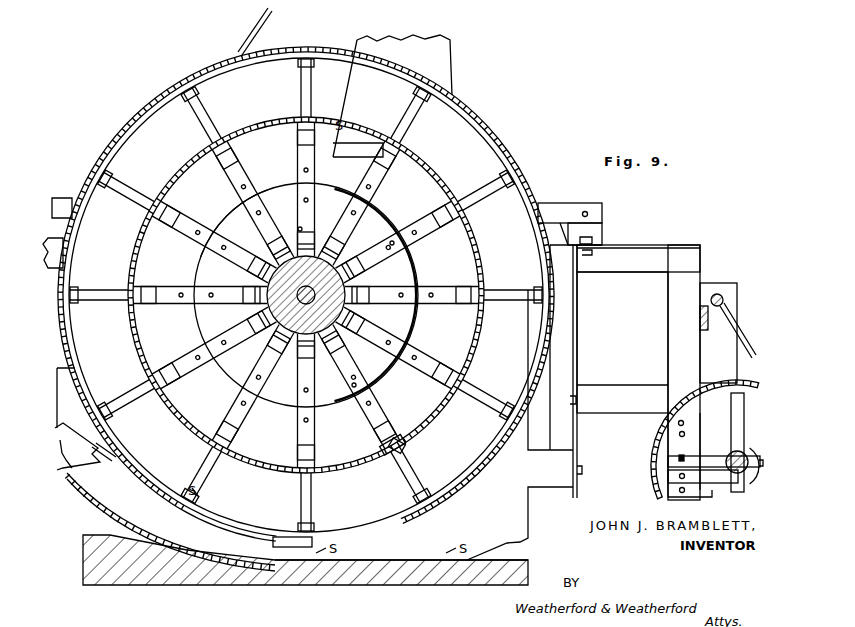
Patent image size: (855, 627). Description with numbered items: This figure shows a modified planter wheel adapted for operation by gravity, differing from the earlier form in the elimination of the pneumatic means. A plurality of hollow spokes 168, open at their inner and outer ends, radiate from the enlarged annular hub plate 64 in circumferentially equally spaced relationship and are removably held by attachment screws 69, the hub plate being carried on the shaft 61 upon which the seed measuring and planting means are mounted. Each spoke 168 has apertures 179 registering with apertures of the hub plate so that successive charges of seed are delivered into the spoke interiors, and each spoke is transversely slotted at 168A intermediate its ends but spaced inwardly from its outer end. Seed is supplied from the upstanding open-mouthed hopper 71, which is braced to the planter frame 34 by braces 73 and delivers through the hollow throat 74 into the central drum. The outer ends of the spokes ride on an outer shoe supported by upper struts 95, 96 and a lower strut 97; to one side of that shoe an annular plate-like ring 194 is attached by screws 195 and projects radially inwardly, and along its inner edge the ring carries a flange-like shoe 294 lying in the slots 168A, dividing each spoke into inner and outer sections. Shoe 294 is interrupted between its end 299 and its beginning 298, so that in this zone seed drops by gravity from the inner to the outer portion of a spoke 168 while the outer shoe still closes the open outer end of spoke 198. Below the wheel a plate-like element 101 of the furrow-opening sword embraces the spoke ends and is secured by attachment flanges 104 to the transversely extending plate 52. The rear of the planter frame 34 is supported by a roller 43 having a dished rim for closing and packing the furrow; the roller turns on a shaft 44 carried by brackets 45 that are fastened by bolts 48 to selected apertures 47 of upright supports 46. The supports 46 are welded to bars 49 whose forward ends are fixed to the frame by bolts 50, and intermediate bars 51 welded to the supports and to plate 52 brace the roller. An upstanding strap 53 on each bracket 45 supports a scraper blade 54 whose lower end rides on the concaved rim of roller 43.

The planter frame 34 is at (208, 229).
The roller 43 is at (750, 386).
The shaft 44 is at (744, 450).
The brackets 45 is at (752, 458).
The upright supports 46 is at (672, 357).
The apertures 47 is at (686, 431).
The bolts 48 is at (686, 457).
The bars 49 is at (632, 254).
The bolts 50 is at (592, 236).
The intermediate bars 51 is at (726, 286).
The transversely extending plate 52 is at (706, 322).
The upstanding strap 53 is at (724, 299).
The scraper blade 54 is at (748, 343).
The shaft 61 is at (264, 304).
The hub plate 64 is at (306, 295).
The attachment screws 69 is at (335, 295).
The hopper 71 is at (445, 80).
The braces 73 is at (262, 30).
The throat 74 is at (376, 295).
The upper strut 95 is at (68, 200).
The upper strut 96 is at (548, 208).
The lower strut 97 is at (72, 430).
The plate-like element 101 is at (64, 390).
The attachment flanges 104 is at (540, 486).
The spokes 168 is at (306, 295).
The transverse slots 168A is at (306, 295).
The apertures 179 is at (292, 548).
The annular plate-like ring 194 is at (306, 295).
The screws 195 is at (306, 294).
The spoke 198 is at (332, 295).
The flange-like shoe 294 is at (306, 295).
The beginning of shoe 298 is at (426, 403).
The end of shoe 299 is at (410, 448).